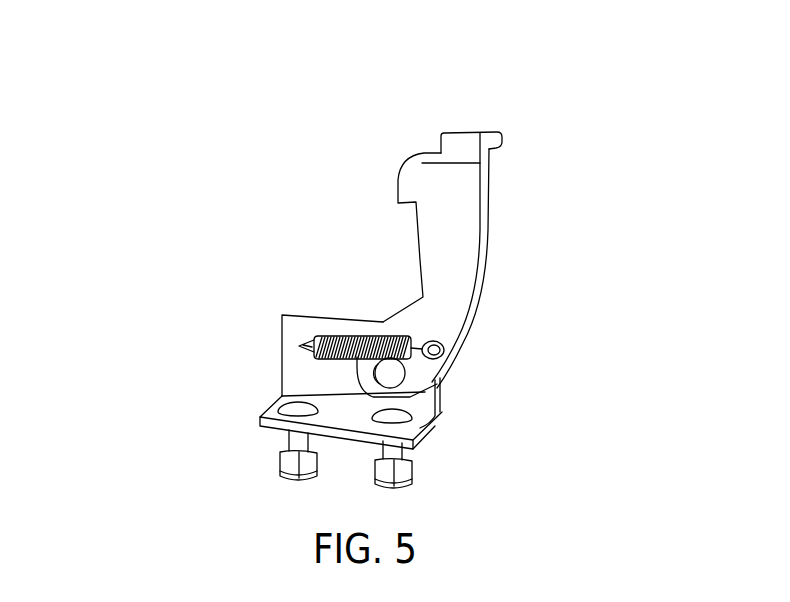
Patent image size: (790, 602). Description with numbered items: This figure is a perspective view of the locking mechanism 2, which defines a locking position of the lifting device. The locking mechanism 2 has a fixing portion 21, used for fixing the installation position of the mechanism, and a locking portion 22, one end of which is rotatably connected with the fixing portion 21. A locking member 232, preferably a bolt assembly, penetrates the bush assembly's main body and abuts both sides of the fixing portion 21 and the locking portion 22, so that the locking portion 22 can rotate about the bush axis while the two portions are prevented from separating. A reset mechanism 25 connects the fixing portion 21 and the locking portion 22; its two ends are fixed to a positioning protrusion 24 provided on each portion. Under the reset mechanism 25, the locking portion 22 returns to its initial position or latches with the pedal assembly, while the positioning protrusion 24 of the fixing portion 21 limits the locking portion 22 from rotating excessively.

The locking mechanism 2 is at (140, 60).
The fixing portion 21 is at (298, 380).
The locking portion 22 is at (460, 227).
The positioning protrusion 24 is at (305, 337).
The reset mechanism 25 is at (372, 343).
The locking member 232 is at (400, 375).